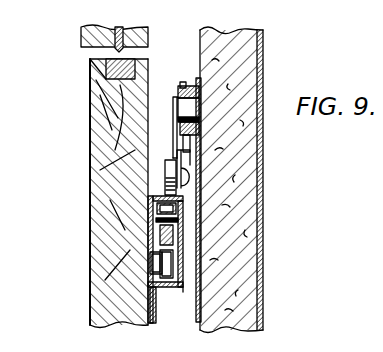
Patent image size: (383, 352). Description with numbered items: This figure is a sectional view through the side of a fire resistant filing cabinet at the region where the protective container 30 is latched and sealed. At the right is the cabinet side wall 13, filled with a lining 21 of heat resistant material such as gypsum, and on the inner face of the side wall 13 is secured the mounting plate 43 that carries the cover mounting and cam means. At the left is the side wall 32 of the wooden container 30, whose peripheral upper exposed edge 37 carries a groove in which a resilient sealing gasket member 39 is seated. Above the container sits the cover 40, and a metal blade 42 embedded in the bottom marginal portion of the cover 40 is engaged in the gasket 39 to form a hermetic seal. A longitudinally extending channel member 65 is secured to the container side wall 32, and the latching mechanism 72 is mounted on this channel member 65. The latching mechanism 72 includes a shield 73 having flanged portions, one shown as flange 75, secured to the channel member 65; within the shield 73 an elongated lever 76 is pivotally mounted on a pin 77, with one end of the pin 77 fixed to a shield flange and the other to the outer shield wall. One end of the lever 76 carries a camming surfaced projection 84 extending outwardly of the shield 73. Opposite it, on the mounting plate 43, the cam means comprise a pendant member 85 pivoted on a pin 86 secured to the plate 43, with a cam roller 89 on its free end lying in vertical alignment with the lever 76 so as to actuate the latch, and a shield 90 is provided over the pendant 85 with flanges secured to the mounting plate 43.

The side wall 13 is at (259, 162).
The lining 21 is at (245, 33).
The container 30 is at (119, 183).
The side wall 32 is at (98, 178).
The peripheral upper exposed edge 37 is at (92, 59).
The sealing gasket member 39 is at (148, 61).
The cover 40 is at (137, 34).
The metal blade 42 is at (147, 50).
The mounting plate 43 is at (198, 323).
The channel member 65 is at (150, 264).
The latching mechanism 72 is at (178, 291).
The shield 73 is at (182, 270).
The flanged portion 75 is at (154, 323).
The elongated lever 76 is at (160, 215).
The pin 77 is at (172, 242).
The camming surfaced projection 84 is at (183, 194).
The pendant member 85 is at (190, 148).
The pin 86 is at (182, 104).
The cam roller 89 is at (168, 162).
The shield 90 is at (182, 92).